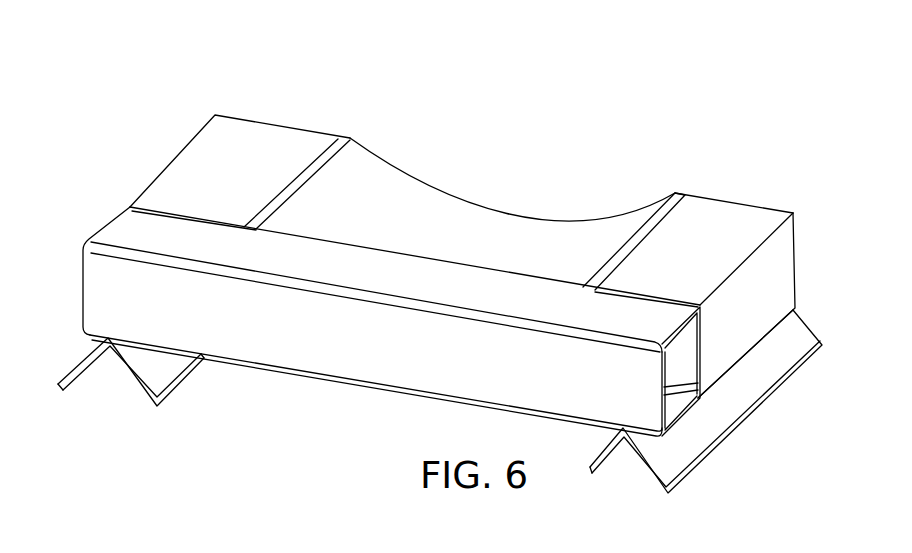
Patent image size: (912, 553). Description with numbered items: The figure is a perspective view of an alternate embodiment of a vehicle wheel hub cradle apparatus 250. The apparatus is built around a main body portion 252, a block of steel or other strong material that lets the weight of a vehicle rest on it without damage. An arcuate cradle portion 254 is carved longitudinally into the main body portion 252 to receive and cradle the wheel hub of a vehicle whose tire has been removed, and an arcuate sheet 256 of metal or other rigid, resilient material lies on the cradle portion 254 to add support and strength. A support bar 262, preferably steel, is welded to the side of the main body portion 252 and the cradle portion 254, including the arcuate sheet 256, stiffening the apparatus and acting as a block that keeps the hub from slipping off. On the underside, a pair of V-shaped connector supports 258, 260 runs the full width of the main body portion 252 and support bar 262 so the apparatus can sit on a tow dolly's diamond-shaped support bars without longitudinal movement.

The cradle apparatus 250 is at (575, 118).
The main body portion 252 is at (737, 218).
The cradle portion 254 is at (375, 173).
The arcuate sheet 256 is at (332, 139).
The connector support 258 is at (165, 383).
The connector support 260 is at (738, 408).
The support bar 262 is at (132, 225).